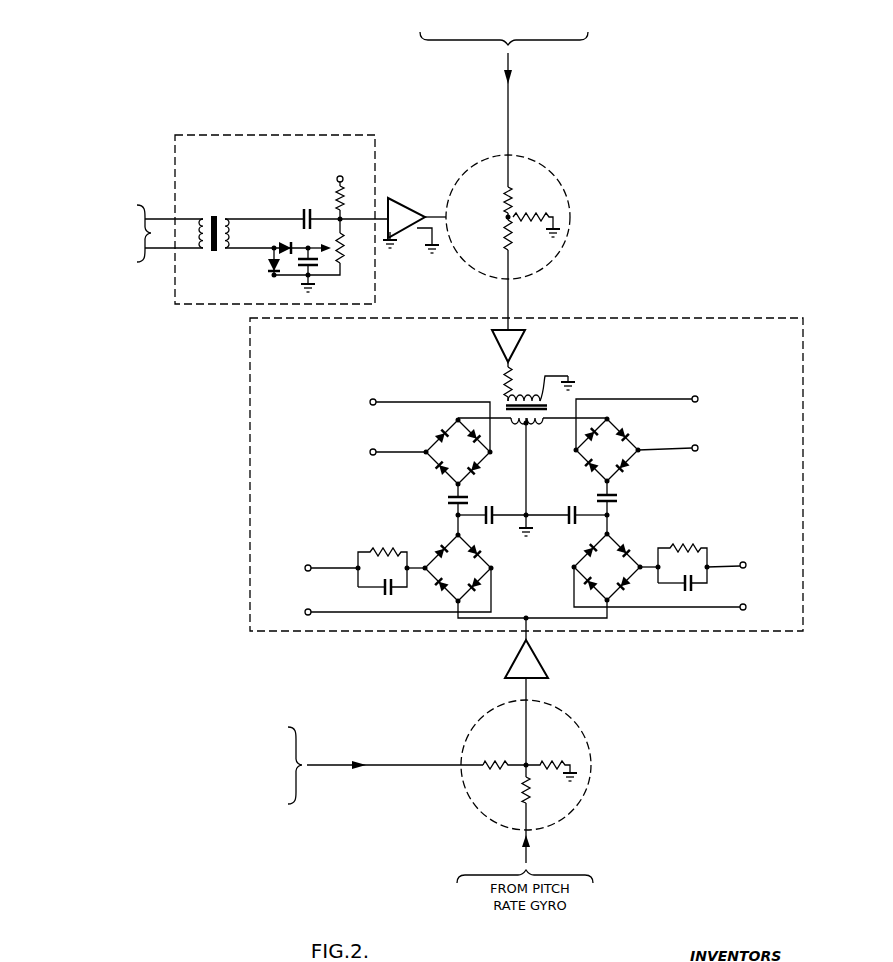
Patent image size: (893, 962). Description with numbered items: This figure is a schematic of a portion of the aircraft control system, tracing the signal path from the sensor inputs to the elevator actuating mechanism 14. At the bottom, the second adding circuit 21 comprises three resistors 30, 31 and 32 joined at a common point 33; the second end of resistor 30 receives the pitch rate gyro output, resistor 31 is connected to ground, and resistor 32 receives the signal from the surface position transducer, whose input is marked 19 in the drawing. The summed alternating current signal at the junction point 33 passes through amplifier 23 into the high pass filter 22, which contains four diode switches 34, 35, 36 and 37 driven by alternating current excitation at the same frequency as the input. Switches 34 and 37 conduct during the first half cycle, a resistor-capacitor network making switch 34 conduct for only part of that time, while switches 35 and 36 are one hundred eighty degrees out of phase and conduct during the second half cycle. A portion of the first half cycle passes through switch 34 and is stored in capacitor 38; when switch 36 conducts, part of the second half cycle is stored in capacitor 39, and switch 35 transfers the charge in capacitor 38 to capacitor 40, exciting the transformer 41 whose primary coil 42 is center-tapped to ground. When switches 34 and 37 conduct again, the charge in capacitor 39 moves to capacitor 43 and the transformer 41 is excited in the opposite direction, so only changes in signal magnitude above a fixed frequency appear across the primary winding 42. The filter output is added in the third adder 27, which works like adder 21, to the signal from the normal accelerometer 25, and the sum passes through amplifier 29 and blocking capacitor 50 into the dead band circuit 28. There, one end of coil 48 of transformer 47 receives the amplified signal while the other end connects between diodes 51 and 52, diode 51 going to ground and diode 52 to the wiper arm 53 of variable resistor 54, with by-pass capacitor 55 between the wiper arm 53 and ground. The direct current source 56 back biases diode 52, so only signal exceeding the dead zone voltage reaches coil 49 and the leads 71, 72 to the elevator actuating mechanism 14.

The elevator actuating mechanism 14 is at (95, 239).
The surface position transducer 19 is at (312, 770).
The second adding circuit 21 is at (585, 753).
The high pass filter 22 is at (628, 323).
The amplifier 23 is at (552, 668).
The normal accelerometer 25 is at (523, 25).
The third adder 27 is at (563, 188).
The dead band circuit 28 is at (188, 306).
The amplifier 29 is at (412, 197).
The resistor 30 is at (531, 792).
The resistor 31 is at (550, 764).
The resistor 32 is at (495, 764).
The common point 33 is at (524, 767).
The diode switch 34 is at (458, 568).
The diode switch 35 is at (458, 452).
The diode switch 36 is at (607, 567).
The diode switch 37 is at (607, 450).
The capacitor 38 is at (490, 506).
The capacitor 39 is at (570, 506).
The capacitor 40 is at (447, 500).
The transformer 41 is at (504, 404).
The primary coil 42 is at (536, 424).
The capacitor 43 is at (618, 494).
The transformer 47 is at (215, 213).
The coil 48 is at (231, 218).
The coil 49 is at (201, 218).
The blocking capacitor 50 is at (303, 209).
The diode 51 is at (268, 260).
The diode 52 is at (283, 238).
The wiper arm 53 is at (330, 251).
The variable resistor 54 is at (345, 255).
The by-pass capacitor 55 is at (306, 272).
The direct current source 56 is at (343, 179).
The output lead 71 is at (157, 218).
The output lead 72 is at (155, 249).